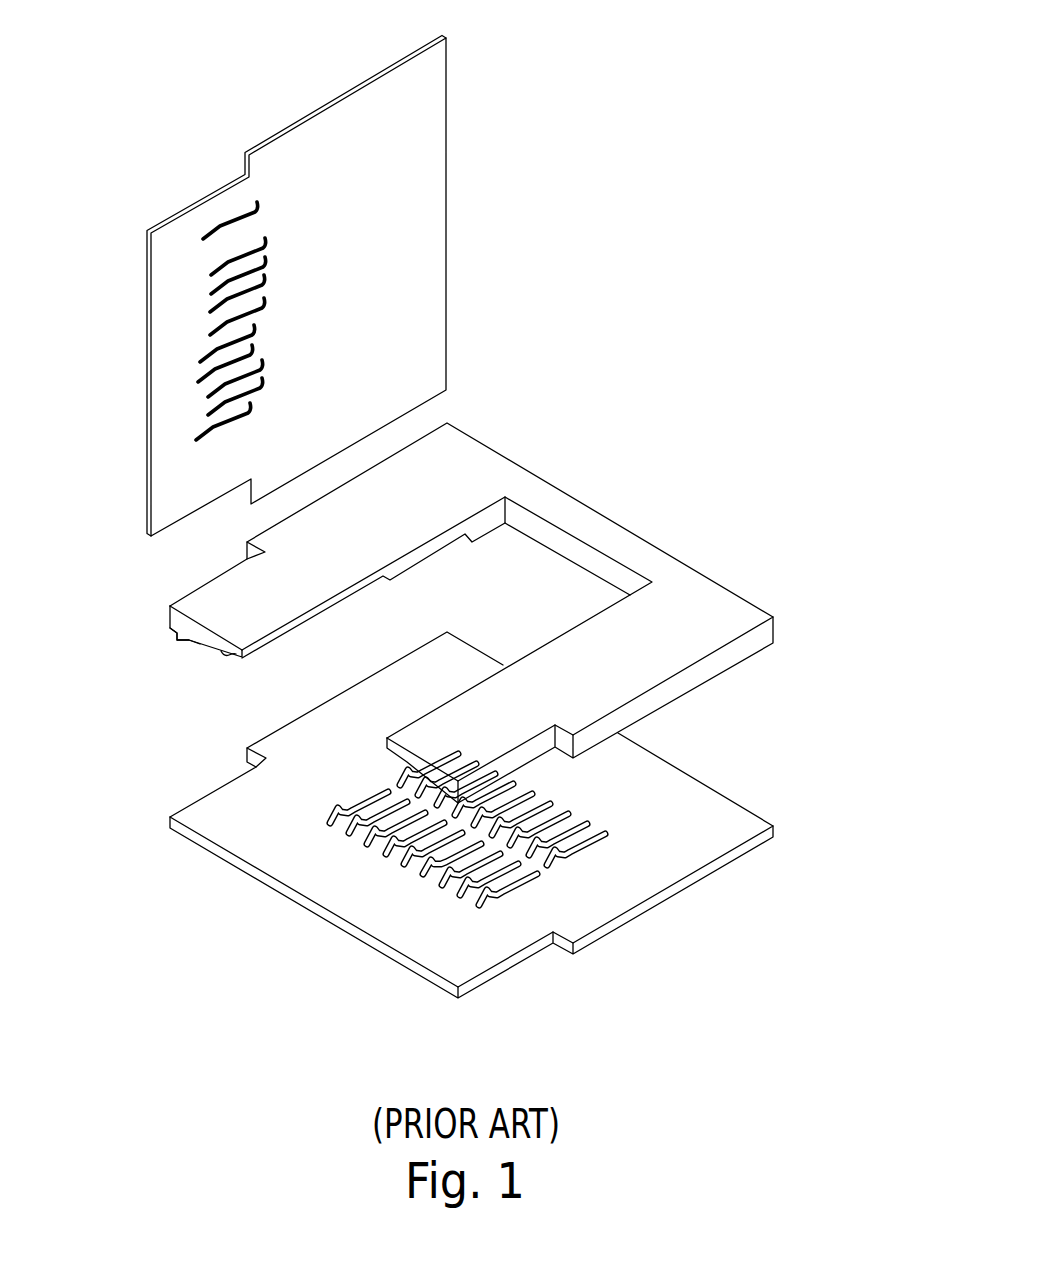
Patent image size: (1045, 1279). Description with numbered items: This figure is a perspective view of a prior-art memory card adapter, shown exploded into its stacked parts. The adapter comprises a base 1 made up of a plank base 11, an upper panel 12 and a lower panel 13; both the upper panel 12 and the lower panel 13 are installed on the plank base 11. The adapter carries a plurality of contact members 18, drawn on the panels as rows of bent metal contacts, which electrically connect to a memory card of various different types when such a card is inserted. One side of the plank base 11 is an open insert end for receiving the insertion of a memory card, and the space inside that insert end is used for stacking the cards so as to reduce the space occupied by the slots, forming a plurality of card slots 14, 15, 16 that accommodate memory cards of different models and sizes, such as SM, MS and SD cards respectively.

The base 1 is at (747, 888).
The plank base 11 is at (463, 456).
The upper panel 12 is at (428, 124).
The lower panel 13 is at (590, 897).
The card slot 14 is at (205, 642).
The card slot 15 is at (505, 592).
The card slot 16 is at (248, 655).
The contact members 18 is at (222, 282).